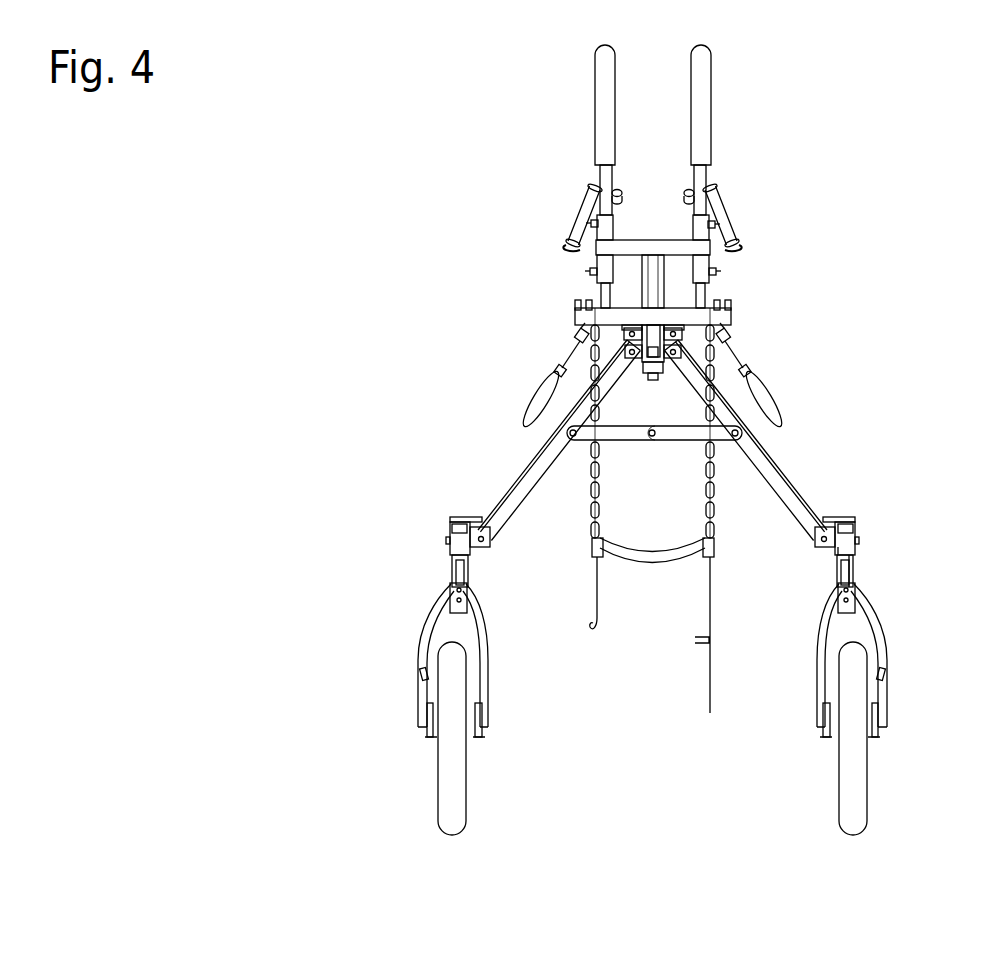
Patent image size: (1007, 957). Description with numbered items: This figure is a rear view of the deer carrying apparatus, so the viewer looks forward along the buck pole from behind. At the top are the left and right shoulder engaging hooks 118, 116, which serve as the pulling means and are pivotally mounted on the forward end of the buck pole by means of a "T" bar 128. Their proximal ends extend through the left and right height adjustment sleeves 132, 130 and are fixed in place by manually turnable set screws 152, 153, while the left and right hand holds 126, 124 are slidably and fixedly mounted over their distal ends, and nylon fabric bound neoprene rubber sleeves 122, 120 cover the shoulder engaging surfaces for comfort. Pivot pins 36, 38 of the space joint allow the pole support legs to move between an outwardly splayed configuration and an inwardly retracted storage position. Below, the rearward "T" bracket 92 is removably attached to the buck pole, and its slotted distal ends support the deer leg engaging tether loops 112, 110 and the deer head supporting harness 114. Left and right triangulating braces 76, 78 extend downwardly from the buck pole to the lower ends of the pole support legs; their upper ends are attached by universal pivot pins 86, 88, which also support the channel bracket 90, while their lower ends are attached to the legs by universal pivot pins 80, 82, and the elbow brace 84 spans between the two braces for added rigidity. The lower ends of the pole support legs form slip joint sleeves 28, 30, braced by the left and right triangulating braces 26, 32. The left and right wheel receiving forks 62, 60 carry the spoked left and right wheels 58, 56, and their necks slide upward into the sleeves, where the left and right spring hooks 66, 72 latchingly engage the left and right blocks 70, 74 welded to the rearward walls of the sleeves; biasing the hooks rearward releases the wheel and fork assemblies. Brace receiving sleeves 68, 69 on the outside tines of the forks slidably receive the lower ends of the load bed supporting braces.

The neoprene rubber sleeve 120 is at (604, 80).
The neoprene rubber sleeve 122 is at (706, 80).
The left shoulder engaging hook 118 is at (598, 182).
The right shoulder engaging hook 116 is at (701, 180).
The left hand hold 126 is at (590, 205).
The right height adjustment sleeve 130 is at (726, 235).
The right hand hold 124 is at (713, 215).
The set screw 152 is at (578, 230).
The set screw 153 is at (722, 270).
The left height adjustment sleeve 132 is at (600, 266).
The "T" bar 128 is at (642, 246).
The pivot pin 38 is at (715, 320).
The pivot pin 36 is at (633, 330).
The rearward "T" bracket 92 is at (697, 330).
The channel bracket 90 is at (655, 365).
The universal pivot pin 86 is at (584, 338).
The universal pivot pin 88 is at (729, 340).
The deer leg engaging tether loop 112 is at (553, 385).
The deer leg engaging tether loop 110 is at (752, 385).
The left triangulating brace 76 is at (530, 485).
The right triangulating brace 78 is at (780, 485).
The left triangulating brace 26 is at (462, 517).
The right triangulating brace 32 is at (848, 520).
The universal pivot pin 80 is at (448, 540).
The left slip joint sleeve 28 is at (458, 548).
The right slip joint sleeve 30 is at (853, 550).
The left block 70 is at (466, 578).
The left spring hook 66 is at (452, 578).
The right block 74 is at (853, 580).
The right spring hook 72 is at (855, 595).
The universal pivot pin 82 is at (830, 548).
The left wheel receiving fork 62 is at (490, 655).
The right wheel receiving fork 60 is at (822, 655).
The brace receiving sleeve 68 is at (424, 672).
The brace receiving sleeve 69 is at (882, 672).
The elbow brace 84 is at (655, 441).
The deer head supporting harness 114 is at (660, 556).
The left wheel 58 is at (447, 800).
The right wheel 56 is at (860, 800).